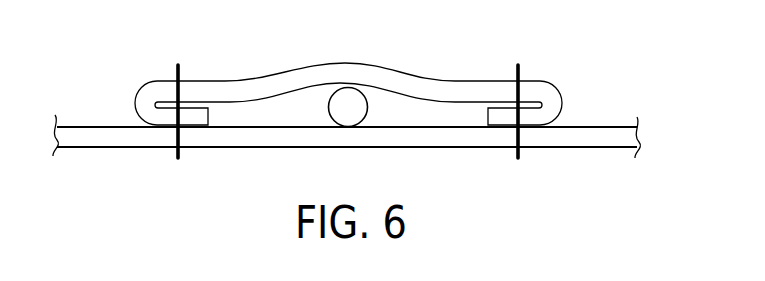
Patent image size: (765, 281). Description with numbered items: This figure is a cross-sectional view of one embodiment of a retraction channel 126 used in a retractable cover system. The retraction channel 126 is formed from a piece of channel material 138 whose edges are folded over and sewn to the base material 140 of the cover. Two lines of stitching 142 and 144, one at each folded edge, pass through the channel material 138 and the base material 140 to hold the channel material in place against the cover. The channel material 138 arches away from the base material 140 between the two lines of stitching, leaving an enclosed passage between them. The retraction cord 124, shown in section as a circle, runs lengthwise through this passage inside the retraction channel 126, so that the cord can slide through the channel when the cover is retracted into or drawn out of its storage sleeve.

The retraction cord 124 is at (347, 100).
The retraction channel 126 is at (298, 107).
The channel material 138 is at (448, 88).
The base material 140 is at (610, 132).
The stitching 142 is at (175, 72).
The stitching 144 is at (520, 72).